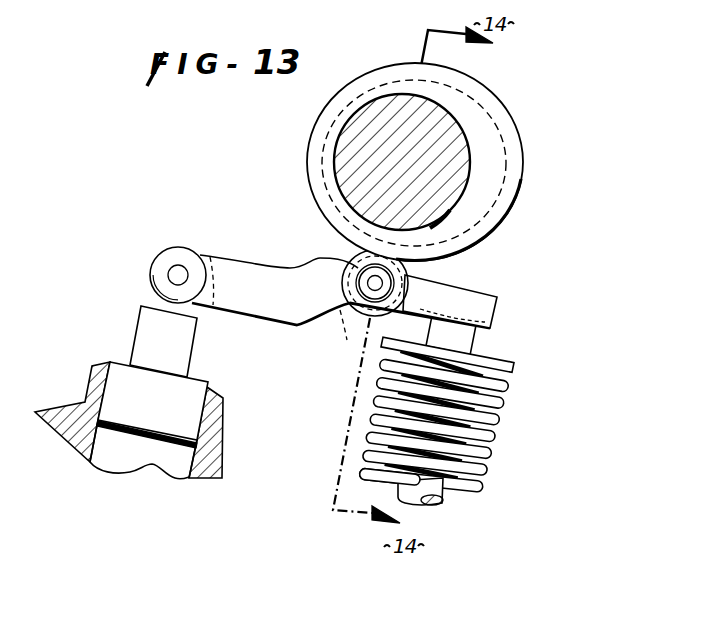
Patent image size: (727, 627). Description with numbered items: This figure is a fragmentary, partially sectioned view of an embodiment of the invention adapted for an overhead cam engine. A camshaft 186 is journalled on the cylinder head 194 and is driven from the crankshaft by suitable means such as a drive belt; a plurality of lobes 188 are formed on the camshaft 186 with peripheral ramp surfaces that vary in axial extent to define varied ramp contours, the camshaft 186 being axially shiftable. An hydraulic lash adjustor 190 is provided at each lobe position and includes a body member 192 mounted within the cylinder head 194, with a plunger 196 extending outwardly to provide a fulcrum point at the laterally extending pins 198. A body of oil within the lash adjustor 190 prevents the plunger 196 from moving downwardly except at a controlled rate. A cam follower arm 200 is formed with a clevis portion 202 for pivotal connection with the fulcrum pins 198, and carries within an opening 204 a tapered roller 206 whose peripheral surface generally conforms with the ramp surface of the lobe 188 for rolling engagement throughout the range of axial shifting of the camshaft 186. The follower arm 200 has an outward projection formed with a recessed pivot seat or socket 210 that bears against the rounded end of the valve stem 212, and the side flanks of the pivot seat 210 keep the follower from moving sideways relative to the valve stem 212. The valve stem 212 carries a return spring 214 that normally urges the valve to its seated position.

The camshaft 186 is at (356, 86).
The lobe 188 is at (493, 110).
The hydraulic lash adjustor 190 is at (104, 360).
The body member 192 is at (197, 387).
The cylinder head 194 is at (215, 437).
The plunger 196 is at (143, 327).
The fulcrum pins 198 is at (178, 270).
The cam follower arm 200 is at (272, 278).
The clevis portion 202 is at (214, 257).
The opening 204 is at (347, 336).
The tapered roller 206 is at (409, 272).
The pivot seat 210 is at (488, 333).
The valve stem 212 is at (513, 362).
The return spring 214 is at (496, 416).